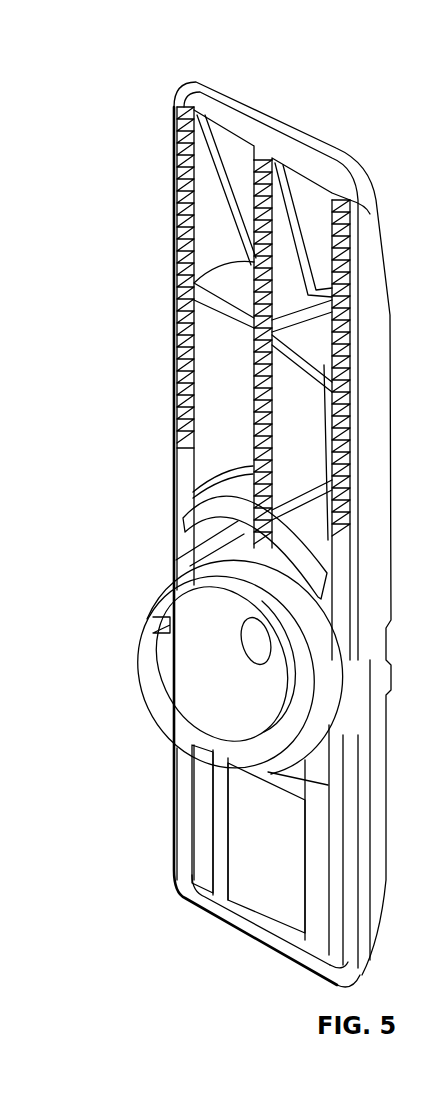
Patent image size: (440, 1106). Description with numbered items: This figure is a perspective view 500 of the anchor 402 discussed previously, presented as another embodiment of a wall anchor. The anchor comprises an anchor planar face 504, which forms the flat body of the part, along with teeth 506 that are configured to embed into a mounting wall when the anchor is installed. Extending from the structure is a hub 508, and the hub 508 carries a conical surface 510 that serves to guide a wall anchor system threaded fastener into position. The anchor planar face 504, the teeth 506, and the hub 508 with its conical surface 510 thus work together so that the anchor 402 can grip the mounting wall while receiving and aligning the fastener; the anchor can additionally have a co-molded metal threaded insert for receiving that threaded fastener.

The perspective view 500 is at (324, 92).
The anchor 402 is at (139, 391).
The teeth 506 is at (173, 259).
The anchor planar face 504 is at (240, 428).
The hub 508 is at (207, 56).
The conical surface 510 is at (227, 640).